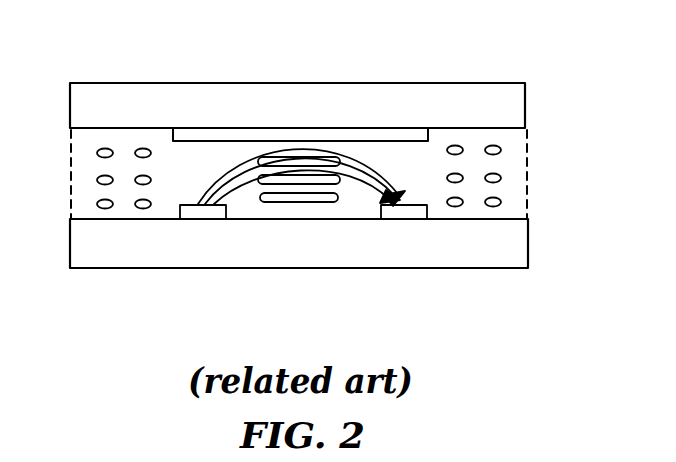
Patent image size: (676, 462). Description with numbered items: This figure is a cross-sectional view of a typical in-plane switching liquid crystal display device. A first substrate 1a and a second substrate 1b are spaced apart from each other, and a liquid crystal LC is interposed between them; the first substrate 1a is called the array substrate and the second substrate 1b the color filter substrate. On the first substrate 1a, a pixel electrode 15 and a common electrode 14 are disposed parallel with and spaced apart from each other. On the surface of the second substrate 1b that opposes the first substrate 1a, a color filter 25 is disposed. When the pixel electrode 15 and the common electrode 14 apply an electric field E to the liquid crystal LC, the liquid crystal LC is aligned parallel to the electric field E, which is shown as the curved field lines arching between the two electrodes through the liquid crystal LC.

The first substrate 1a is at (440, 255).
The second substrate 1b is at (247, 95).
The color filter 25 is at (203, 141).
The pixel electrode 15 is at (193, 219).
The common electrode 14 is at (397, 212).
The liquid crystal LC is at (288, 203).
The electric field E is at (378, 167).